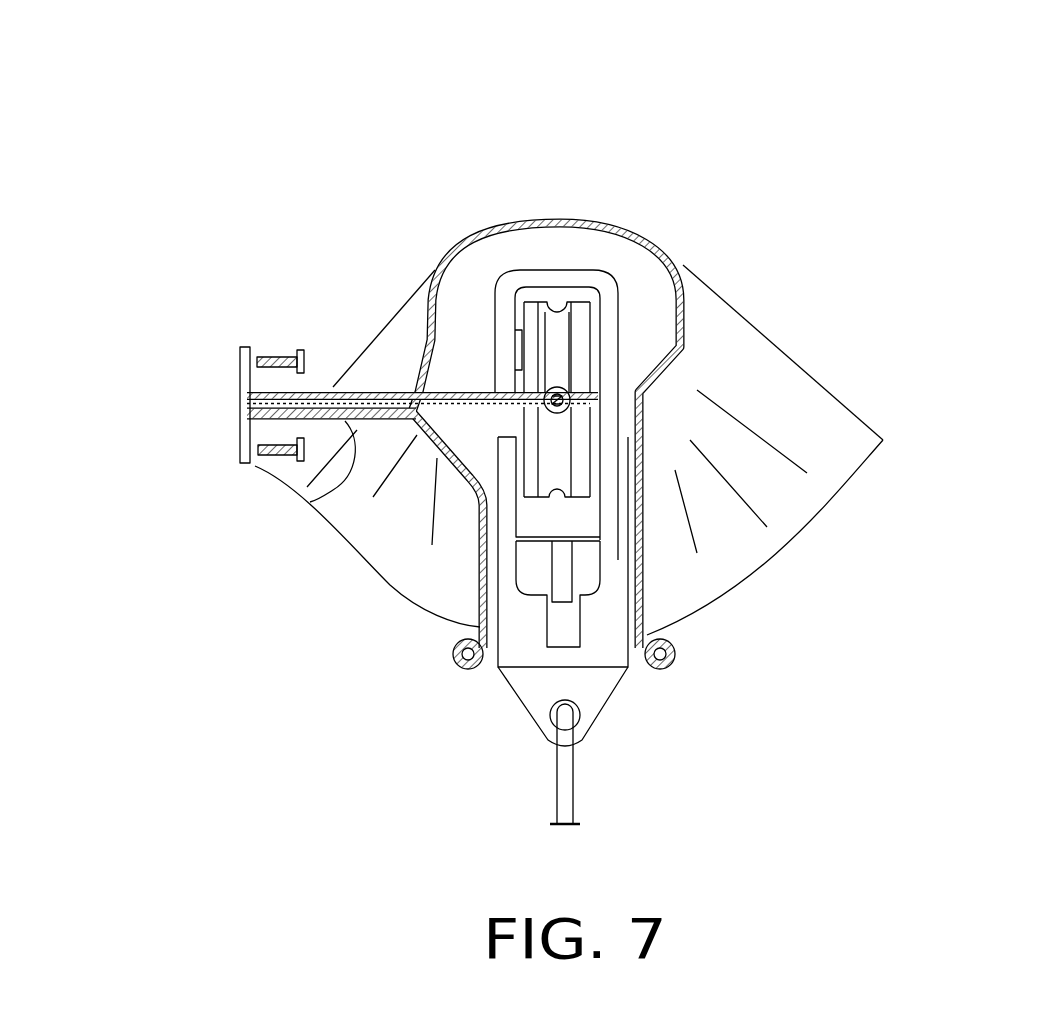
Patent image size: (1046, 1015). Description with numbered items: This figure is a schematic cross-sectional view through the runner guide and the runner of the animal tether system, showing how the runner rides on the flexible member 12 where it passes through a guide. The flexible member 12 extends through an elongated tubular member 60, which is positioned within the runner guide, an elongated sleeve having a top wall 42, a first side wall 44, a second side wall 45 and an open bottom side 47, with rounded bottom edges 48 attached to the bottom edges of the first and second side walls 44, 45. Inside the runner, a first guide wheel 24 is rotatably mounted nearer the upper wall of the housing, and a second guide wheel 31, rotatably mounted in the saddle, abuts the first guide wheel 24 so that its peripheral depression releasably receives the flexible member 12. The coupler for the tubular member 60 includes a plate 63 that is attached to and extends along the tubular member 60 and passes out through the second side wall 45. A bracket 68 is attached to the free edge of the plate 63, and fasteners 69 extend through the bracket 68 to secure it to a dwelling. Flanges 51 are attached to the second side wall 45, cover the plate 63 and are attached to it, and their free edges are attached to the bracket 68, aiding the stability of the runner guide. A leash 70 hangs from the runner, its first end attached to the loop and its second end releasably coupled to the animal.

The flexible member 12 is at (557, 397).
The first guide wheel 24 is at (587, 320).
The second guide wheel 31 is at (587, 447).
The top wall 42 is at (570, 221).
The first side wall 44 is at (643, 483).
The second side wall 45 is at (480, 560).
The open bottom side 47 is at (490, 672).
The rounded bottom edges 48 is at (457, 667).
The flanges 51 is at (337, 387).
The elongated tubular member 60 is at (557, 417).
The plate 63 is at (455, 392).
The bracket 68 is at (237, 348).
The fasteners 69 is at (275, 356).
The leash 70 is at (560, 770).